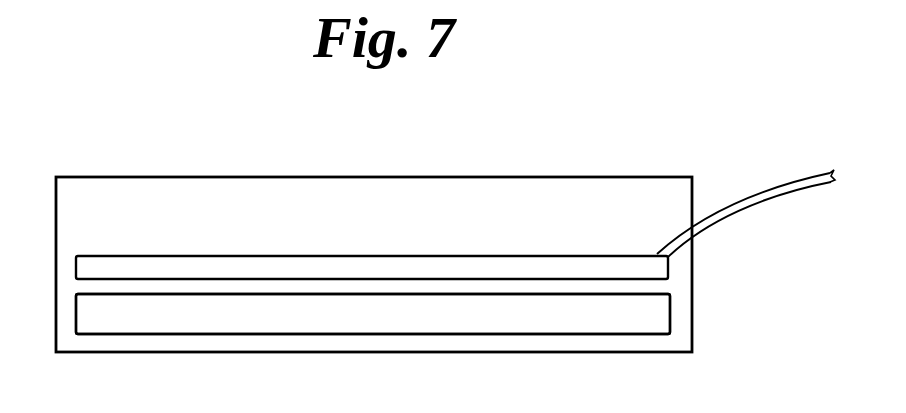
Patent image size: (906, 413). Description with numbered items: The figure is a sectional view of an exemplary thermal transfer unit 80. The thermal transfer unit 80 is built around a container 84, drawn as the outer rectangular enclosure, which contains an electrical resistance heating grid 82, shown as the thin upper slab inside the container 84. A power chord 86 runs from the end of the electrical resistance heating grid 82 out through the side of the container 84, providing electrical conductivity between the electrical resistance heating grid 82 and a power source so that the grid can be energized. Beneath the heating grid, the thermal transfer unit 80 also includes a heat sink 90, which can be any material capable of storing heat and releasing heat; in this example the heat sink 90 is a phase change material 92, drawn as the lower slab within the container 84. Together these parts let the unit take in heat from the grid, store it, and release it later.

The thermal transfer unit 80 is at (193, 153).
The electrical resistance heating grid 82 is at (535, 258).
The container 84 is at (360, 177).
The power chord 86 is at (763, 195).
The heat sink 90 is at (273, 317).
The phase change material 92 is at (435, 323).